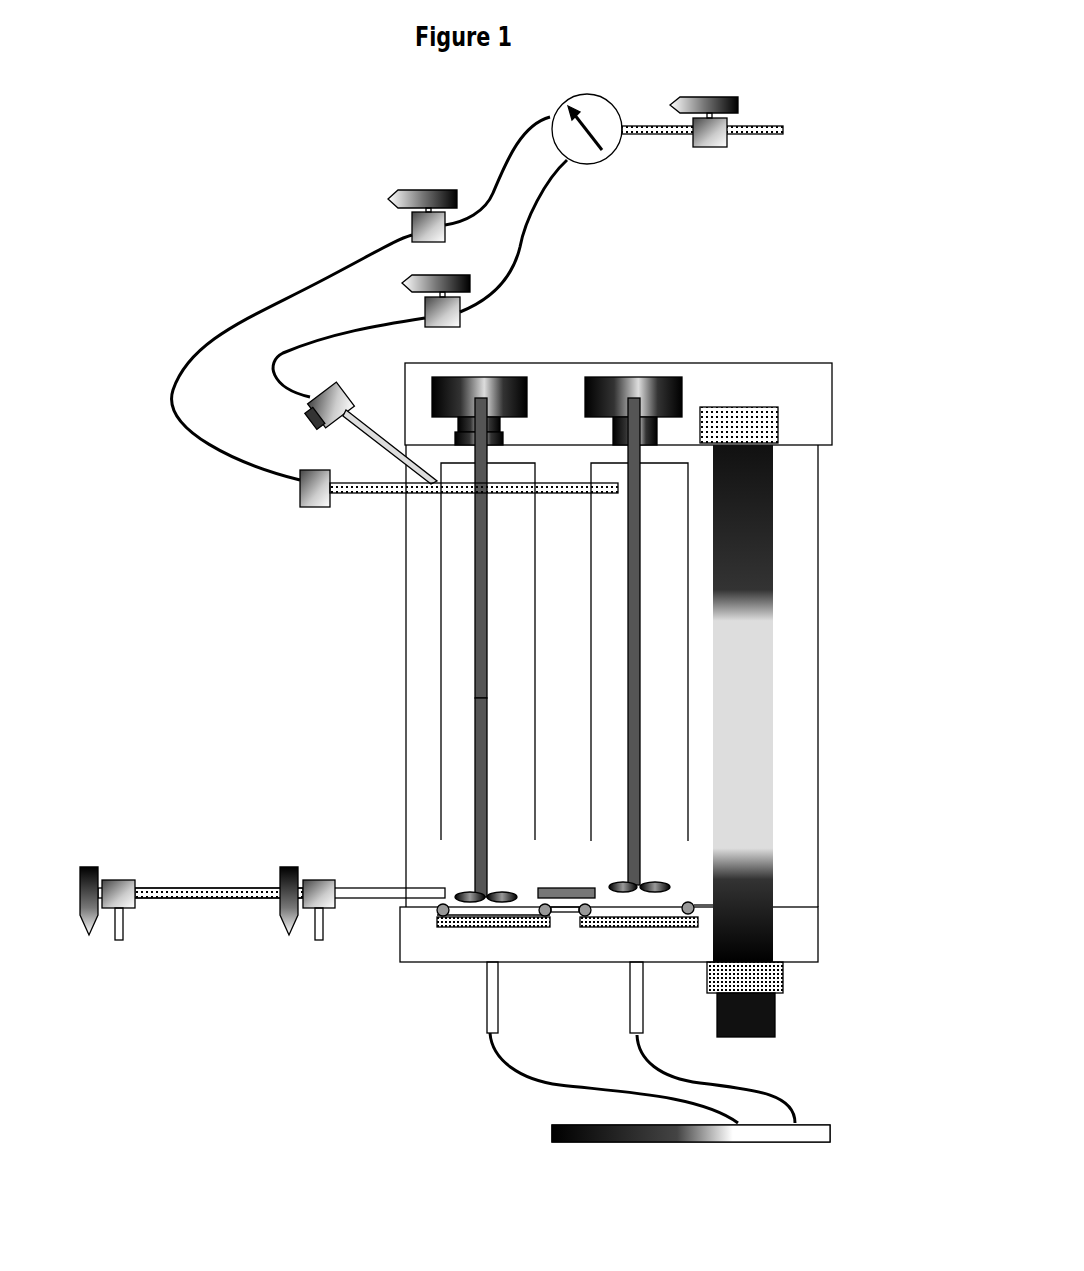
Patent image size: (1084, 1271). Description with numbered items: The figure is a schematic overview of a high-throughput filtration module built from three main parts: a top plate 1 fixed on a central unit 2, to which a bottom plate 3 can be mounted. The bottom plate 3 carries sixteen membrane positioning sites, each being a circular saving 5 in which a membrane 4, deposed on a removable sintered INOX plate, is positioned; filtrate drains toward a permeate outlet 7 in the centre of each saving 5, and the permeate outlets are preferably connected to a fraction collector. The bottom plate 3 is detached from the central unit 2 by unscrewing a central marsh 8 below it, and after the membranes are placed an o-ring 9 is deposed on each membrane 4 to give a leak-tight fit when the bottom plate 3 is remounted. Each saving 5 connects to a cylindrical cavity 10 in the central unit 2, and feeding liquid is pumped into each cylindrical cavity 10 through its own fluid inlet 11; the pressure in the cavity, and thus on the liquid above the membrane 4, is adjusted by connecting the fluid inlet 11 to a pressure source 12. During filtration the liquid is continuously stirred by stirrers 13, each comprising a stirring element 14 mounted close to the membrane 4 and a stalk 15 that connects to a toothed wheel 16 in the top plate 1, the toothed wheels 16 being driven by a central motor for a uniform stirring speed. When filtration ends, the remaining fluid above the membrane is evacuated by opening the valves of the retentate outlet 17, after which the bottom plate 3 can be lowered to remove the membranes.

The top plate 1 is at (616, 662).
The central unit 2 is at (625, 652).
The bottom plate 3 is at (618, 916).
The membrane 4 is at (453, 927).
The circular saving 5 is at (488, 912).
The permeate outlet 7 is at (488, 962).
The central marsh 8 is at (728, 982).
The o-ring 9 is at (437, 910).
The cylindrical cavity 10 is at (462, 657).
The fluid inlet 11 is at (320, 417).
The pressure source 12 is at (607, 158).
The stirrer 13 is at (476, 740).
The stirring element 14 is at (463, 890).
The stalk 15 is at (477, 583).
The toothed wheel 16 is at (430, 383).
The retentate outlet 17 is at (320, 873).